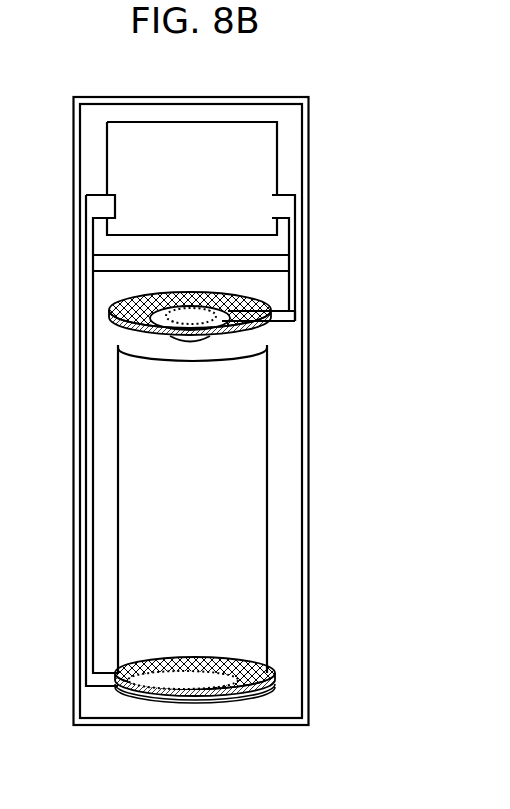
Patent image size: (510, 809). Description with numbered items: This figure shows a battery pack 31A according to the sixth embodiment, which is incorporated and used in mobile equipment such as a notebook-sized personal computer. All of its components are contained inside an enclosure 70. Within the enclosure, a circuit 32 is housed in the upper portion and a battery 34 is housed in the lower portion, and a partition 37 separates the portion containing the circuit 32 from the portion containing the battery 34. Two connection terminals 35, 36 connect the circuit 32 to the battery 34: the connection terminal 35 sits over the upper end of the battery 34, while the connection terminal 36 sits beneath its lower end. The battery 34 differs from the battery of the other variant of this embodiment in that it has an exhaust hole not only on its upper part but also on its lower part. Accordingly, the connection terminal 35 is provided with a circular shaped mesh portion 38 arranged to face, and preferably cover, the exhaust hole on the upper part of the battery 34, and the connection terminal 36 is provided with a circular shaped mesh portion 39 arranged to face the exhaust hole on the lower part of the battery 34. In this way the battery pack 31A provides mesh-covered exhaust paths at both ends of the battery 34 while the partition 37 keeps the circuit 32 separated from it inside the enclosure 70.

The enclosure 70 is at (253, 726).
The battery pack 31A is at (57, 455).
The circuit 32 is at (223, 168).
The partition 37 is at (123, 263).
The mesh portion 38 is at (110, 312).
The connection terminal 35 is at (297, 314).
The battery 34 is at (232, 503).
The mesh portion 39 is at (133, 701).
The connection terminal 36 is at (100, 680).